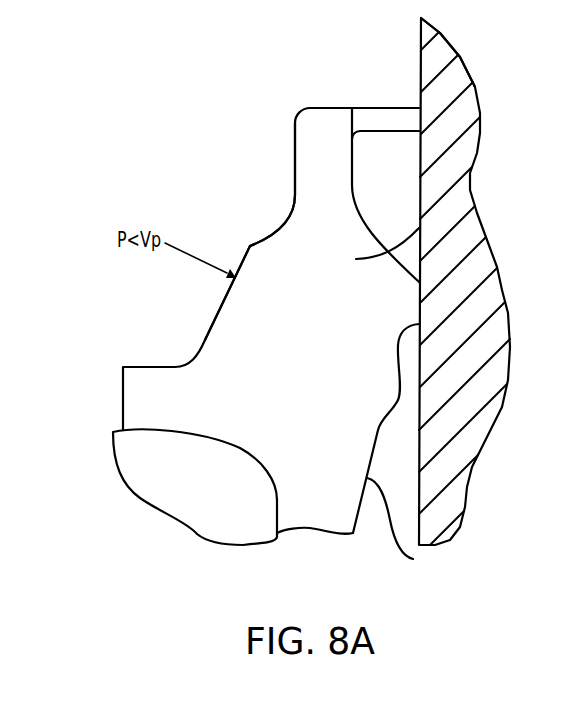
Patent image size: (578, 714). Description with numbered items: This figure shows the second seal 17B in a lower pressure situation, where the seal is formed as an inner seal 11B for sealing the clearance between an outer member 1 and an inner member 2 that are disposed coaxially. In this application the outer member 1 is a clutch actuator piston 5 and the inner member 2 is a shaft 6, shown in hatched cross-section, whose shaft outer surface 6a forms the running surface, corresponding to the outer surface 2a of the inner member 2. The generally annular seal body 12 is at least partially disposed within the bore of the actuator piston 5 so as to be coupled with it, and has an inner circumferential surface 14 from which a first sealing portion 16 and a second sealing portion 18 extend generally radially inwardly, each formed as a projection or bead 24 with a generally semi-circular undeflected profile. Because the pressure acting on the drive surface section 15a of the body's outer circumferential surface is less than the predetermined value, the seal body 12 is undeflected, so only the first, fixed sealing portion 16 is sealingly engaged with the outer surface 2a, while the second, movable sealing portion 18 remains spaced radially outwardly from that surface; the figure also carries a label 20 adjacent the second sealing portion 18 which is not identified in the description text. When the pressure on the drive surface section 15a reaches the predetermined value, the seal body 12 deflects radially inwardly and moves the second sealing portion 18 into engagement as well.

The outer member 1 is at (142, 535).
The inner member 2 is at (373, 35).
The outer surface 2a is at (410, 171).
The clutch actuator piston 5 is at (212, 531).
The shaft 6 is at (430, 85).
The shaft outer surface 6a is at (375, 250).
The inner seal 11B is at (264, 77).
The seal body 12 is at (276, 270).
The inner circumferential surface 14 is at (402, 527).
The drive surface section 15a is at (218, 308).
The first sealing portion 16 is at (438, 296).
The second seal 17B is at (452, 338).
The second sealing portion 18 is at (407, 411).
The cavity wall 20 is at (411, 388).
The projection or bead 24 is at (390, 288).